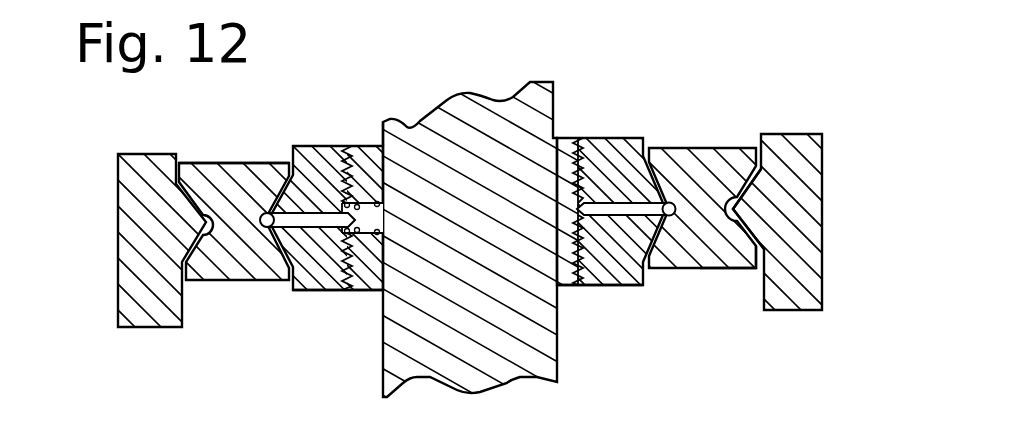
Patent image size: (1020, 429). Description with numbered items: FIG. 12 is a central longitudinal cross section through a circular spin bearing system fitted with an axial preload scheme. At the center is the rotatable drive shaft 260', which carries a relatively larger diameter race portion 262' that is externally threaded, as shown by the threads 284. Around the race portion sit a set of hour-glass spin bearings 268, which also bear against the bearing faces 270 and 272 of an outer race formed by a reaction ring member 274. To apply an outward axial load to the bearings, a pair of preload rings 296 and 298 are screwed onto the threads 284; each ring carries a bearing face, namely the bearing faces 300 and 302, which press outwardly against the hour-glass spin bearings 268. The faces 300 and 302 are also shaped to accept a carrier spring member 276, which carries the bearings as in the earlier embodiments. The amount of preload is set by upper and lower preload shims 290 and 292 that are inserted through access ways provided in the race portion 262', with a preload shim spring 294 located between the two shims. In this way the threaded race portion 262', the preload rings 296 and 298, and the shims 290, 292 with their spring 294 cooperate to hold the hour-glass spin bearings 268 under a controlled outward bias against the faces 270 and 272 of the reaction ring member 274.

The drive shaft 260' is at (510, 214).
The race portion 262' is at (510, 214).
The hour-glass spin bearings 268 is at (188, 164).
The bearing face 270 is at (735, 168).
The bearing face 272 is at (740, 270).
The reaction ring member 274 is at (123, 165).
The carrier spring member 276 is at (258, 176).
The threads 284 is at (349, 145).
The upper preload shim 290 is at (384, 120).
The lower preload shim 292 is at (364, 292).
The preload shim spring 294 is at (380, 221).
The preload ring 296 is at (308, 146).
The preload ring 298 is at (310, 292).
The bearing face 300 is at (271, 207).
The bearing face 302 is at (263, 234).